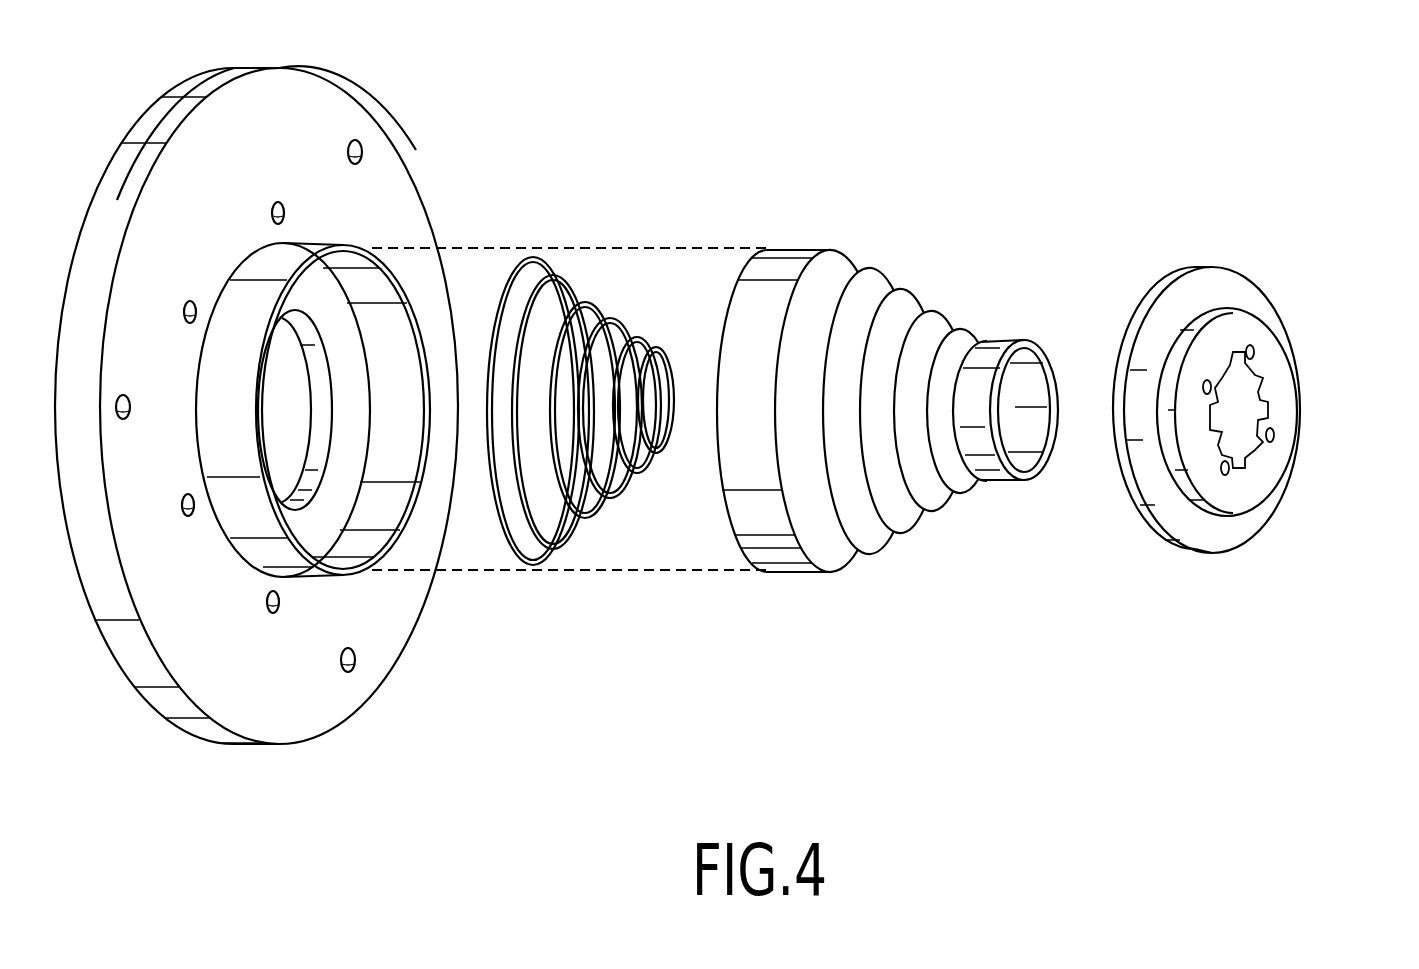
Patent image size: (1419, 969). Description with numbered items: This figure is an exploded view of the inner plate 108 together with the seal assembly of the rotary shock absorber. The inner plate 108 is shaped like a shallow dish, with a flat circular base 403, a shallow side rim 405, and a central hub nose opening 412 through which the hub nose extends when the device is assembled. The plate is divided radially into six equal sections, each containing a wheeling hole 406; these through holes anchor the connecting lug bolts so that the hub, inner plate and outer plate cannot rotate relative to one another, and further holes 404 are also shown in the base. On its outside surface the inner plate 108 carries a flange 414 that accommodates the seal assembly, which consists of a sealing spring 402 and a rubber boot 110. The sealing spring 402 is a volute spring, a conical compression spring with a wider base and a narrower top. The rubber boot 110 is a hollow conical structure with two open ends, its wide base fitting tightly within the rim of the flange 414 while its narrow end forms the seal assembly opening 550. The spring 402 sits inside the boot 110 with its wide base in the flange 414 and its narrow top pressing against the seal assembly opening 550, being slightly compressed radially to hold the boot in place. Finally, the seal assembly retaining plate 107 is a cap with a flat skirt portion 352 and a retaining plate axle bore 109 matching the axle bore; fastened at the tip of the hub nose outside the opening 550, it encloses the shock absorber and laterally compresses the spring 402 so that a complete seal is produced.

The inner plate 108 is at (283, 725).
The flat circular base 403 is at (275, 92).
The mounting holes 404 is at (365, 147).
The shallow side rim 405 is at (192, 82).
The wheeling hole 406 is at (192, 300).
The flange 414 is at (307, 240).
The hub nose opening 412 is at (293, 412).
The sealing spring 402 is at (622, 320).
The rubber boot 110 is at (915, 290).
The seal assembly opening 550 is at (1010, 425).
The seal assembly retaining plate 107 is at (1225, 540).
The flat skirt portion 352 is at (1222, 279).
The retaining plate axle bore 109 is at (1240, 408).